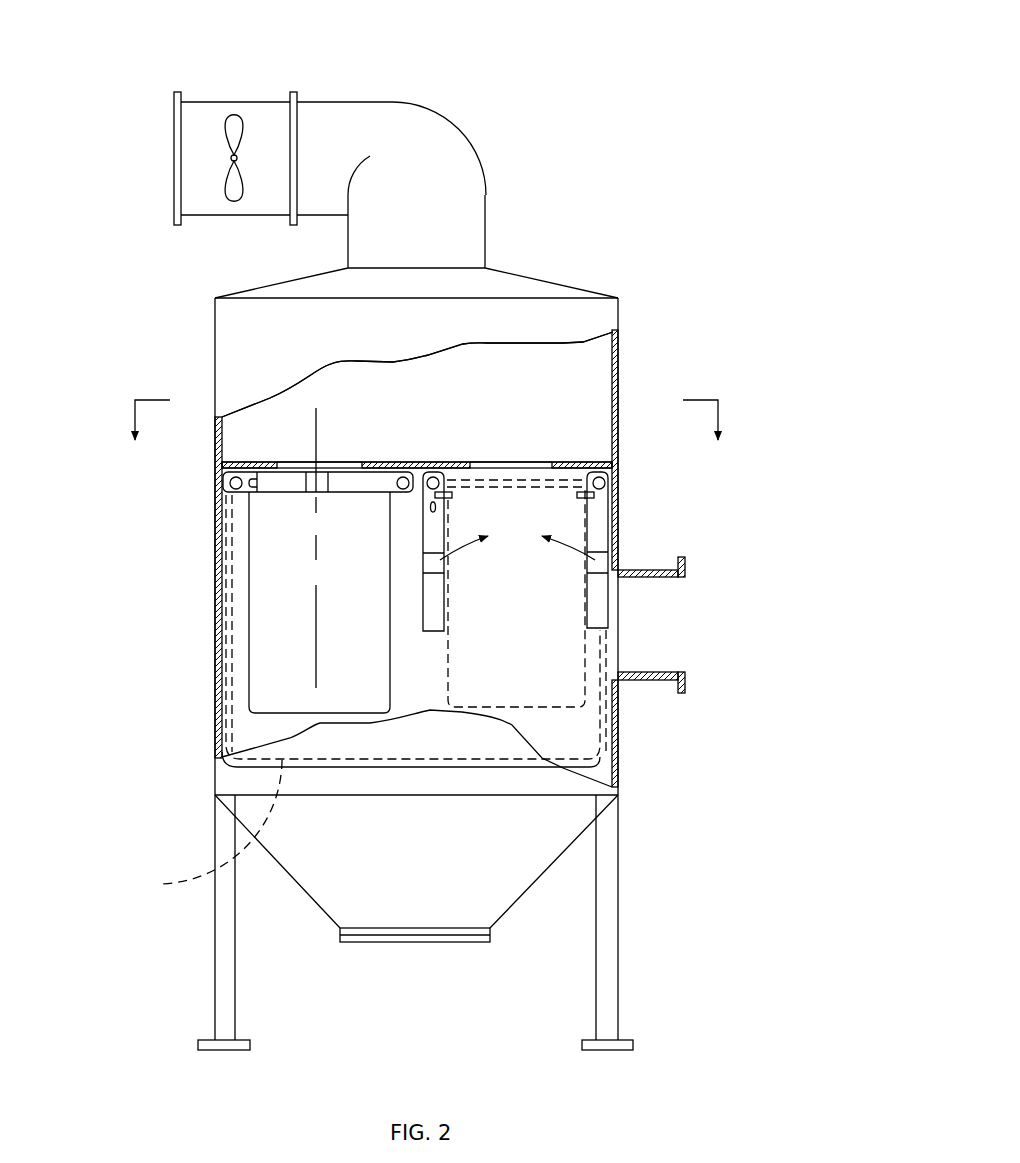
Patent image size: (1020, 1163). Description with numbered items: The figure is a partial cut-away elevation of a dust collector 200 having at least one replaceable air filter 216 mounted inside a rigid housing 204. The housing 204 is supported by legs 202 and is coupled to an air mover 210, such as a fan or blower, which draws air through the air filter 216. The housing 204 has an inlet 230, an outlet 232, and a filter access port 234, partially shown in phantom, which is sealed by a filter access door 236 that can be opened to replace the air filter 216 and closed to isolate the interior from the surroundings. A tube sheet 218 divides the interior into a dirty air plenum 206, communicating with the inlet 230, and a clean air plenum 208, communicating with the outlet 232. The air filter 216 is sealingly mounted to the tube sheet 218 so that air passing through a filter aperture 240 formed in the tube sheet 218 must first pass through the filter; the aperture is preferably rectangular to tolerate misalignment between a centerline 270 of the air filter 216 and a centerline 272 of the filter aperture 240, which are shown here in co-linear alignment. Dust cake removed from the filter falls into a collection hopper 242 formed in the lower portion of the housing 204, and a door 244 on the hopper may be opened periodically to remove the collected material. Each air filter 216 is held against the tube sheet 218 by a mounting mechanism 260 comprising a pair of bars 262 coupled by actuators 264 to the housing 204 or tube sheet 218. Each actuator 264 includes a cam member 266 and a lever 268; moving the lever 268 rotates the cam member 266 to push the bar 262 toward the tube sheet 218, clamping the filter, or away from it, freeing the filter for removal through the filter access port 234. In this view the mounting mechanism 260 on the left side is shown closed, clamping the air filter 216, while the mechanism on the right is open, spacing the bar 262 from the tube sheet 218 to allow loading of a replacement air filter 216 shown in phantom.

The dust collector 200 is at (559, 178).
The legs 202 is at (608, 1022).
The housing 204 is at (619, 370).
The dirty air plenum 206 is at (442, 688).
The clean air plenum 208 is at (547, 364).
The air mover 210 is at (241, 101).
The replaceable air filter 216 is at (263, 633).
The tube sheet 218 is at (415, 462).
The inlet 230 is at (688, 597).
The outlet 232 is at (300, 135).
The filter access port 234 is at (188, 829).
The filter access door 236 is at (245, 766).
The filter aperture 240 is at (343, 462).
The collection hopper 242 is at (537, 872).
The door 244 is at (363, 935).
The mounting mechanism 260 is at (237, 500).
The bars 262 is at (455, 502).
The actuators 264 is at (228, 483).
The cam member 266 is at (237, 476).
The lever 268 is at (280, 493).
The centerline of the air filter 270 is at (312, 428).
The centerline of the filter aperture 272 is at (417, 374).